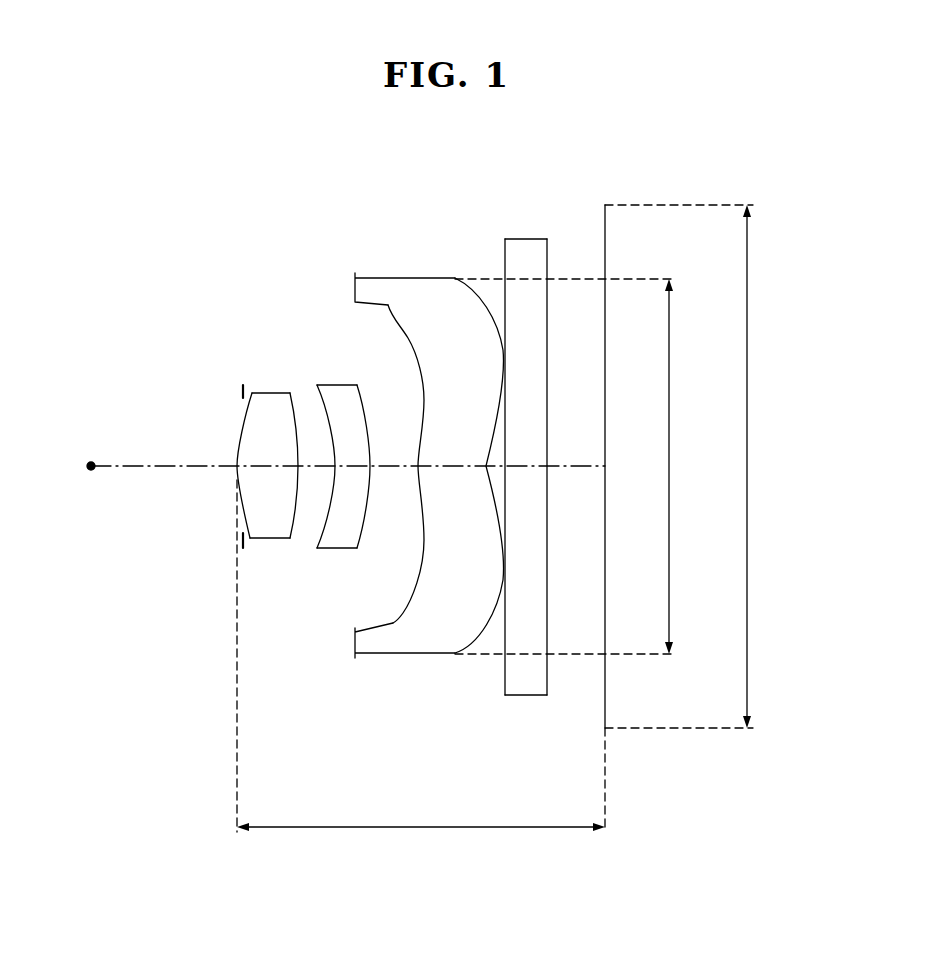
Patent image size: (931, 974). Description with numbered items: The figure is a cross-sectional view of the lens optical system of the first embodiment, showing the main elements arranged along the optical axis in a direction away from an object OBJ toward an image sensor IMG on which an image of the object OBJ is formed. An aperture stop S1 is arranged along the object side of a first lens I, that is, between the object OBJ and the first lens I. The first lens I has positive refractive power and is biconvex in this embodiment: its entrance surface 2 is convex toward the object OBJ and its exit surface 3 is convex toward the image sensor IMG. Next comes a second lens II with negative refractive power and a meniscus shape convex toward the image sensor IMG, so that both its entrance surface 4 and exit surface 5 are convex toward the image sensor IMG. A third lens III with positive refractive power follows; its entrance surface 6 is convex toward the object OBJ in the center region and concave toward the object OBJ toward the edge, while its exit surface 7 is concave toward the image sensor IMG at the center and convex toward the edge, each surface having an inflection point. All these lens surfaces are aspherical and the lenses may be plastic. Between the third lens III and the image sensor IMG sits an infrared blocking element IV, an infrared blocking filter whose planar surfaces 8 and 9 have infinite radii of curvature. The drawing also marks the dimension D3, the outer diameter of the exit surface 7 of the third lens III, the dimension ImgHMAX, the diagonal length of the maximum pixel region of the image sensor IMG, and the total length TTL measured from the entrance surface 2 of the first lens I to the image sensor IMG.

The object OBJ is at (91, 460).
The aperture stop S1 is at (243, 385).
The first lens I is at (246, 483).
The entrance surface of the first lens 2 is at (241, 428).
The exit surface of the first lens 3 is at (296, 406).
The second lens II is at (343, 486).
The entrance surface of the second lens 4 is at (318, 399).
The exit surface of the second lens 5 is at (362, 409).
The third lens III is at (429, 479).
The entrance surface of the third lens 6 is at (390, 307).
The exit surface of the third lens 7 is at (482, 291).
The infrared blocking element IV is at (526, 480).
The entrance surface of the infrared blocking element 8 is at (505, 256).
The exit surface of the infrared blocking element 9 is at (548, 260).
The image sensor IMG is at (605, 226).
The outer diameter of the exit surface of the third lens D3 is at (686, 466).
The diagonal length of maximum pixel region ImgHMAX is at (792, 466).
The total length of the lens optical system TTL is at (421, 814).